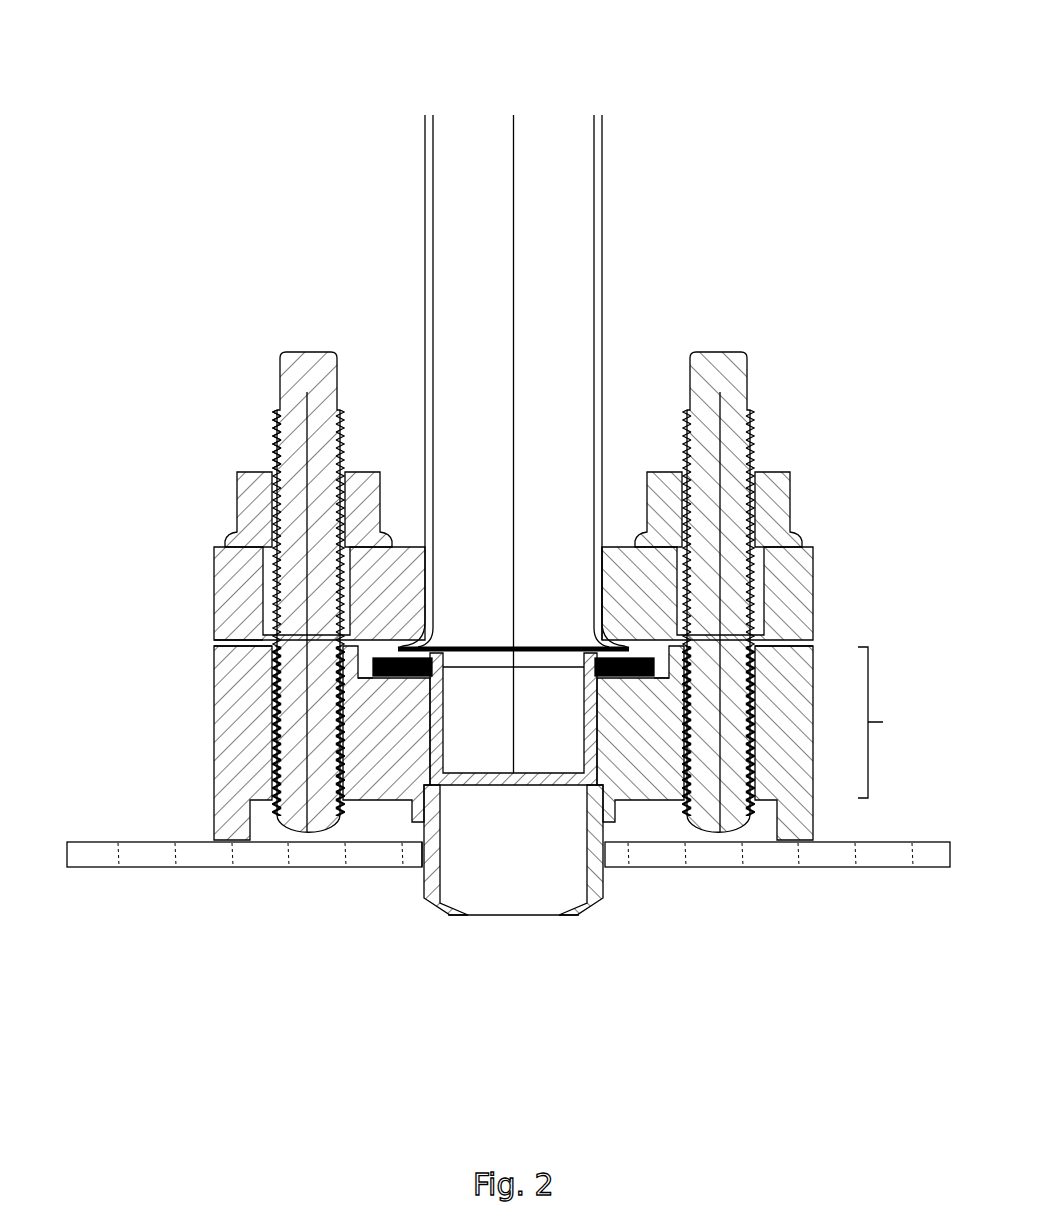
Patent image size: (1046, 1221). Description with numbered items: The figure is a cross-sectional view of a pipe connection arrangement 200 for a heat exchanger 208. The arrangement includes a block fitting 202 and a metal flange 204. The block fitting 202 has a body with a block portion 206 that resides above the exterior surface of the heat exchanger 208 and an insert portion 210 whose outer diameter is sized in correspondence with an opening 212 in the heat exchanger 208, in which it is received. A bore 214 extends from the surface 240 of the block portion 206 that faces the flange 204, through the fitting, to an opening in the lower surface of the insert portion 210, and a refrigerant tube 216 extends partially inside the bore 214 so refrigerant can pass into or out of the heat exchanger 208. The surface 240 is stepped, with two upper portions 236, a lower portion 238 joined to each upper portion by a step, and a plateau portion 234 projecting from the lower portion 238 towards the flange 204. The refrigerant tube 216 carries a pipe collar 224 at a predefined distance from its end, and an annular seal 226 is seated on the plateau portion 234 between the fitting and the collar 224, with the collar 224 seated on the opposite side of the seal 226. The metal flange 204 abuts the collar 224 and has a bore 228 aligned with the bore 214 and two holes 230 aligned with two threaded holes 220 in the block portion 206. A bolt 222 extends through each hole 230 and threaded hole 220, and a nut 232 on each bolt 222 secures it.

The pipe connection arrangement 200 is at (325, 237).
The block fitting 202 is at (236, 781).
The metal flange 204 is at (268, 571).
The block portion 206 is at (906, 722).
The heat exchanger 208 is at (214, 861).
The insert portion 210 is at (605, 880).
The opening 212 is at (422, 862).
The bore 214 is at (540, 845).
The refrigerant tube 216 is at (425, 338).
The threaded holes 220 is at (270, 719).
The bolt 222 is at (296, 370).
The pipe collar 224 is at (405, 652).
The annular seal 226 is at (630, 667).
The bore 228 is at (611, 572).
The holes 230 is at (265, 552).
The nut 232 is at (259, 471).
The plateau portion 234 is at (375, 678).
The upper portions 236 is at (265, 648).
The lower portion 238 is at (363, 682).
The surface 240 is at (270, 640).